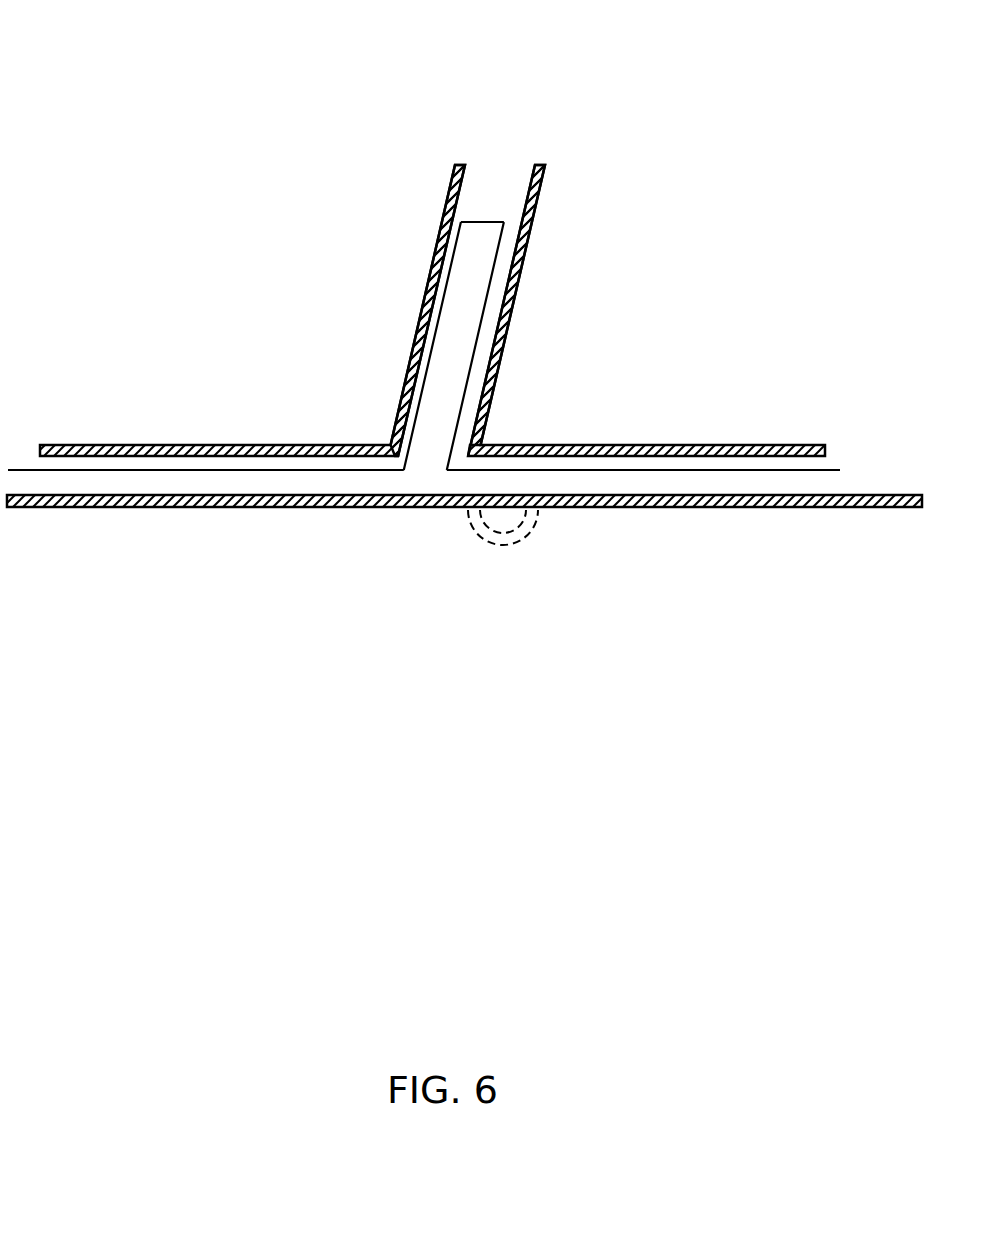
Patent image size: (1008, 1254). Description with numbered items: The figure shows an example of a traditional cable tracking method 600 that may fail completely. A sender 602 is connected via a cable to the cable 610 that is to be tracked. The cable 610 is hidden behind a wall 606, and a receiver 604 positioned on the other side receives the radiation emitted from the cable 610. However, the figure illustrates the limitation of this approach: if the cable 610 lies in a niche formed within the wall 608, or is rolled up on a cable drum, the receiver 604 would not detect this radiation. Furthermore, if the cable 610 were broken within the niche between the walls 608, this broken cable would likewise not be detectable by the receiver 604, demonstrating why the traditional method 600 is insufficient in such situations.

The traditional cable tracking method 600 is at (160, 97).
The sender 602 is at (98, 472).
The receiver 604 is at (506, 552).
The wall 606 is at (319, 532).
The wall 608 is at (415, 262).
The cable 610 is at (145, 460).